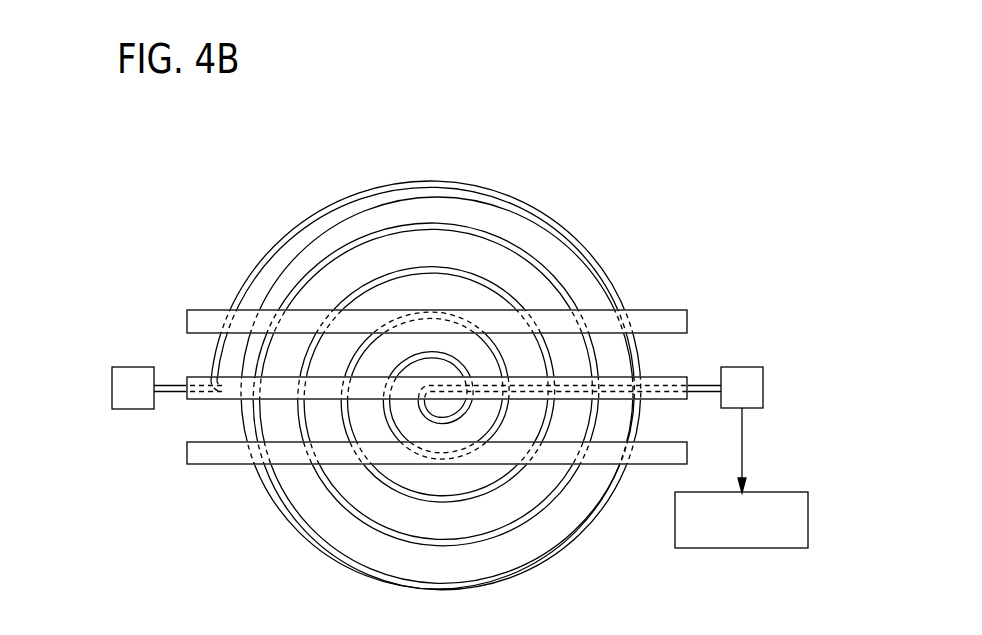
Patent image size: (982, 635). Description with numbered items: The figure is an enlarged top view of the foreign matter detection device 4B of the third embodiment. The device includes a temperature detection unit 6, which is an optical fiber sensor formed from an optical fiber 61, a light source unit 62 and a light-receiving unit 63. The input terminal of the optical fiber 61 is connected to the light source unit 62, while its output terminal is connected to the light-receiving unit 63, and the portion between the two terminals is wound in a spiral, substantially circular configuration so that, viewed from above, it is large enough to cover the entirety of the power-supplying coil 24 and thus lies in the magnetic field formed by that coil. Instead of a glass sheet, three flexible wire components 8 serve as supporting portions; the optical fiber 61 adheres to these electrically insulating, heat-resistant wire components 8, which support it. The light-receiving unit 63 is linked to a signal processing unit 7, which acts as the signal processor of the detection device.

The foreign matter detection device 4B is at (448, 382).
The temperature detection unit 6 is at (446, 382).
The signal processing unit 7 is at (810, 530).
The wire components 8 is at (653, 315).
The power-supplying coil 24 is at (258, 478).
The optical fiber 61 is at (298, 285).
The light source unit 62 is at (132, 397).
The light-receiving unit 63 is at (753, 388).